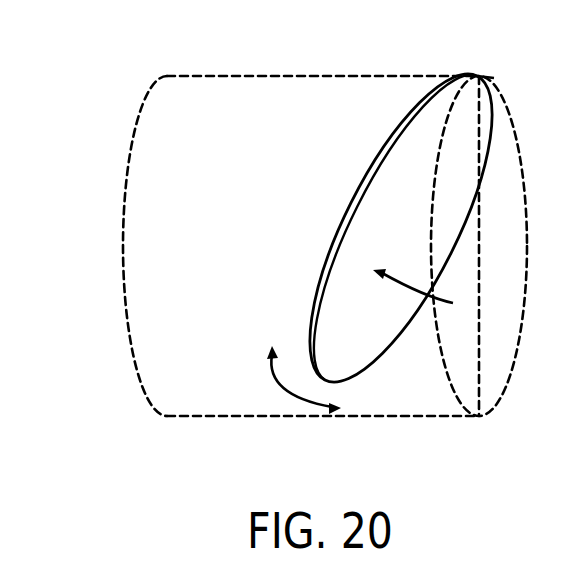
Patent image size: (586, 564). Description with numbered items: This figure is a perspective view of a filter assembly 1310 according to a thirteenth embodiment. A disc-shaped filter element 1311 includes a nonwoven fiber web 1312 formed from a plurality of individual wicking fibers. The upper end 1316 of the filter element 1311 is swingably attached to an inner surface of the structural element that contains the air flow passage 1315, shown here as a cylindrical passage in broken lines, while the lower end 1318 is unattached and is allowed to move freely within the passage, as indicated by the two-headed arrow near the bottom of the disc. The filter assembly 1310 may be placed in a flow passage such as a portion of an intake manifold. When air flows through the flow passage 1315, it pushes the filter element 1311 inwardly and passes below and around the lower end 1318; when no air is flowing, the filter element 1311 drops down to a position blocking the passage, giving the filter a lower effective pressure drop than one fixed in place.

The filter assembly 1310 is at (497, 77).
The filter element 1311 is at (413, 103).
The nonwoven fiber web 1312 is at (435, 295).
The air flow passage 1315 is at (120, 245).
The upper end 1316 is at (460, 77).
The lower end 1318 is at (342, 352).